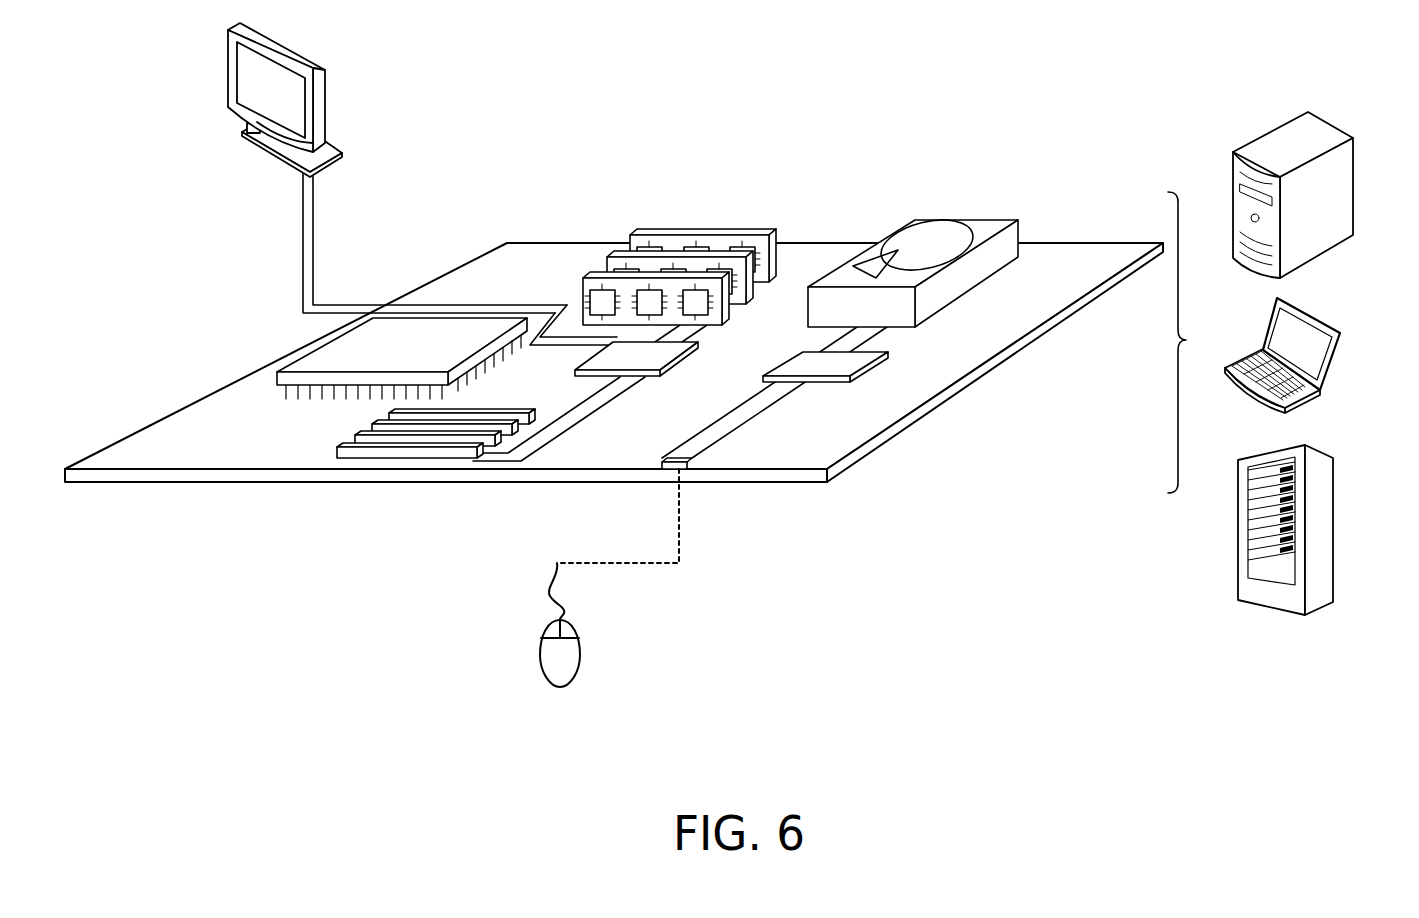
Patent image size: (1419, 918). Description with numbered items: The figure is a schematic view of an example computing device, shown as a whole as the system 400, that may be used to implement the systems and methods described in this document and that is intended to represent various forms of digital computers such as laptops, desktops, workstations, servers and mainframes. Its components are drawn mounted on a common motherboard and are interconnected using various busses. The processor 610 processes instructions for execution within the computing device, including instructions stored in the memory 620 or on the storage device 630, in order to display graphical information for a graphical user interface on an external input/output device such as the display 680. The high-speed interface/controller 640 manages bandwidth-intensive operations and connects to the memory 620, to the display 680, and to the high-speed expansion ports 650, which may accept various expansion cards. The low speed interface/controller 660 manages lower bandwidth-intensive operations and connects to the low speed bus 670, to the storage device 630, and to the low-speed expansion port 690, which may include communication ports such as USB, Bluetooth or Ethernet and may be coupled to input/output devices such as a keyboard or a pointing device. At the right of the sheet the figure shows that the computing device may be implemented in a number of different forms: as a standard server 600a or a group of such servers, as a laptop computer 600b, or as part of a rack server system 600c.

The computer system 400 is at (782, 90).
The processor 610 is at (277, 373).
The memory 620 is at (697, 238).
The storage device 630 is at (963, 218).
The high-speed interface/controller 640 is at (640, 378).
The high-speed expansion ports 650 is at (337, 450).
The low speed interface/controller 660 is at (815, 357).
The low speed bus 670 is at (763, 421).
The display 680 is at (228, 75).
The low-speed expansion port 690 is at (690, 470).
The standard server 600a is at (1265, 130).
The laptop computer 600b is at (1320, 316).
The rack server system 600c is at (1327, 507).